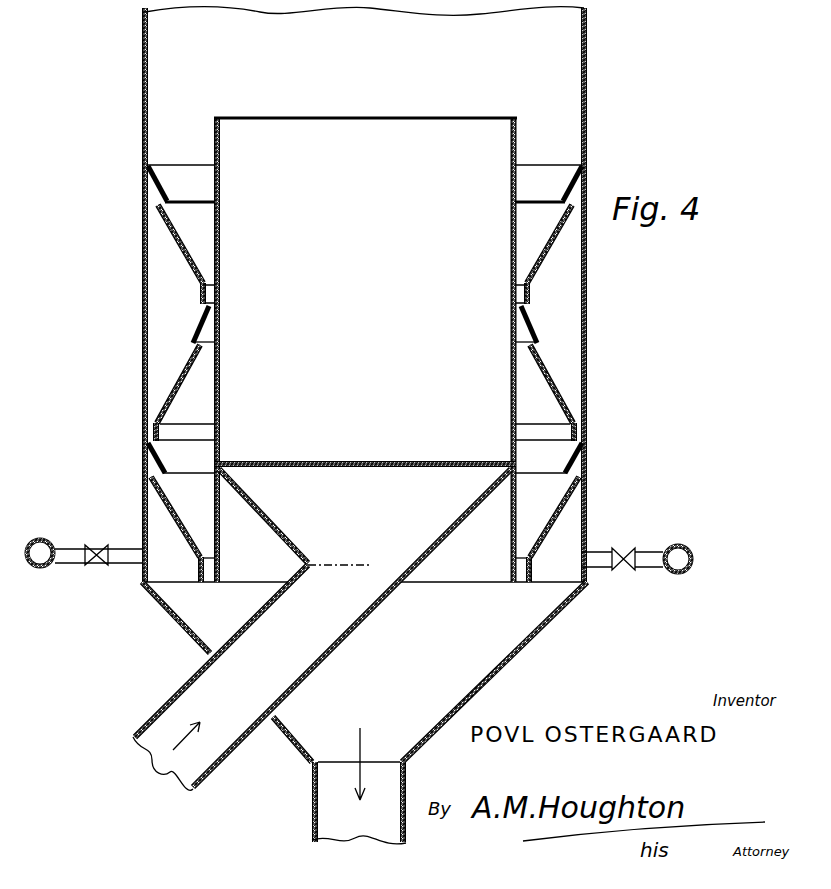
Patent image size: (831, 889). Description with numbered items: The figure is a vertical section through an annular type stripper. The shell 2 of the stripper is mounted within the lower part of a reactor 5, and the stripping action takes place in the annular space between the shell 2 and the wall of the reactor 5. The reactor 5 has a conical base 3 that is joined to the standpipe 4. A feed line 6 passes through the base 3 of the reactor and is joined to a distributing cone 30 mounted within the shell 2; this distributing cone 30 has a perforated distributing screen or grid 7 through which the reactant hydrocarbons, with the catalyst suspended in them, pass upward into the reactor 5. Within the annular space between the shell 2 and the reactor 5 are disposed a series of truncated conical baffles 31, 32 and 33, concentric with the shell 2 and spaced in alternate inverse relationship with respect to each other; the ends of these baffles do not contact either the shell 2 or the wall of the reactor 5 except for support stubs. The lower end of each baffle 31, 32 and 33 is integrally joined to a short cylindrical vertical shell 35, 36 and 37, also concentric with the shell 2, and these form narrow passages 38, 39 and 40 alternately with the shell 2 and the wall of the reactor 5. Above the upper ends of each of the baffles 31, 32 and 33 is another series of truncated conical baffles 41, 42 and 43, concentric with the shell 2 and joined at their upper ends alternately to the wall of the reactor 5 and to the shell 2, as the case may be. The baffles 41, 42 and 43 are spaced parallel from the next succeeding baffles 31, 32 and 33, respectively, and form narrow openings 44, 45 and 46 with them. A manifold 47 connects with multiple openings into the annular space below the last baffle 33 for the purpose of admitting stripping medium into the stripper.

The shell 2 is at (511, 230).
The conical base 3 is at (518, 652).
The standpipe 4 is at (312, 786).
The reactor 5 is at (142, 345).
The feed line 6 is at (225, 757).
The perforated distributing screen or grid 7 is at (410, 463).
The distributing cone 30 is at (282, 528).
The truncated conical baffle 31 is at (164, 269).
The truncated conical baffle 32 is at (172, 383).
The truncated conical baffle 33 is at (161, 541).
The short cylindrical vertical shell 35 is at (200, 296).
The short cylindrical vertical shell 36 is at (185, 433).
The short cylindrical vertical shell 37 is at (198, 571).
The narrow passage 38 is at (212, 297).
The narrow passage 39 is at (157, 437).
The narrow passage 40 is at (205, 566).
The truncated conical baffle 41 is at (160, 185).
The truncated conical baffle 42 is at (203, 332).
The truncated conical baffle 43 is at (158, 462).
The narrow opening 44 is at (160, 207).
The narrow opening 45 is at (192, 348).
The narrow opening 46 is at (158, 478).
The manifold 47 is at (47, 566).